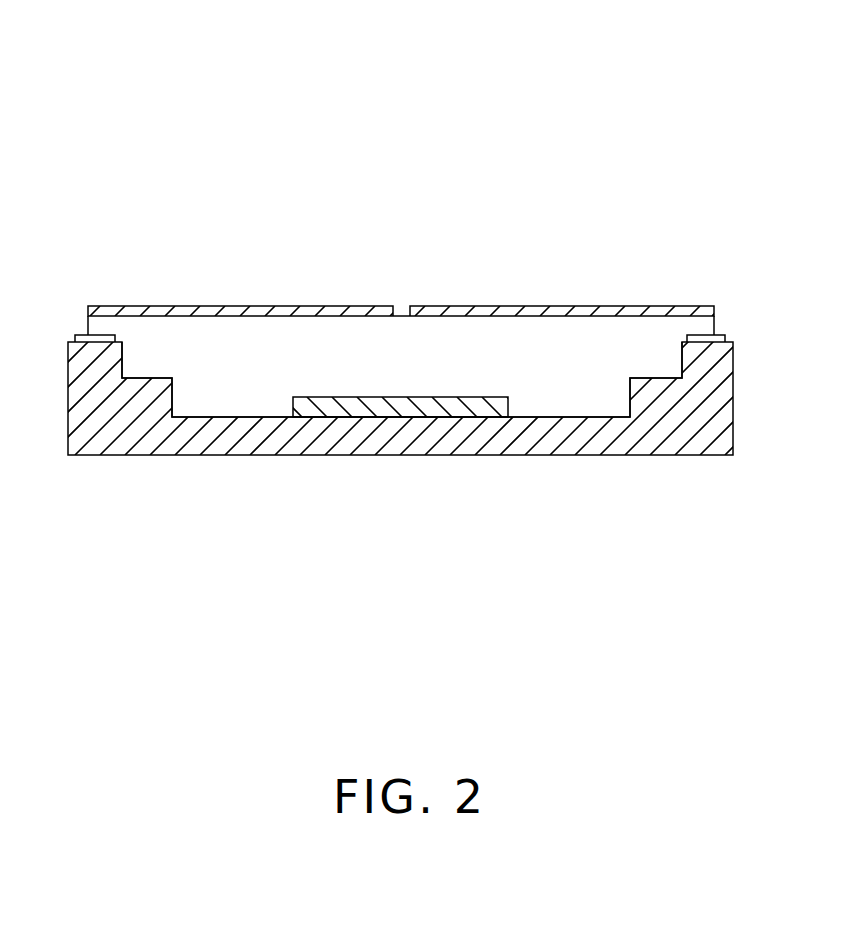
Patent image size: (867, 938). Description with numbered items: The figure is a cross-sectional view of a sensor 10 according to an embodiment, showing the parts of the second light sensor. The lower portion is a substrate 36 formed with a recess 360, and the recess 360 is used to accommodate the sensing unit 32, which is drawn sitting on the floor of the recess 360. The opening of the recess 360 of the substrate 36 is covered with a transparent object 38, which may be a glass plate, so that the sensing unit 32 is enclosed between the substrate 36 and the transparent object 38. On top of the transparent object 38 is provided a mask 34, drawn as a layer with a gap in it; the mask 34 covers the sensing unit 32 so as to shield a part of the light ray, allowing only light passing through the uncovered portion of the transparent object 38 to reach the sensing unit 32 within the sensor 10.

The package structure 10 is at (190, 128).
The sensing unit 32 is at (360, 408).
The mask 34 is at (560, 310).
The substrate 36 is at (520, 455).
The recess 360 is at (598, 368).
The transparent object 38 is at (113, 335).